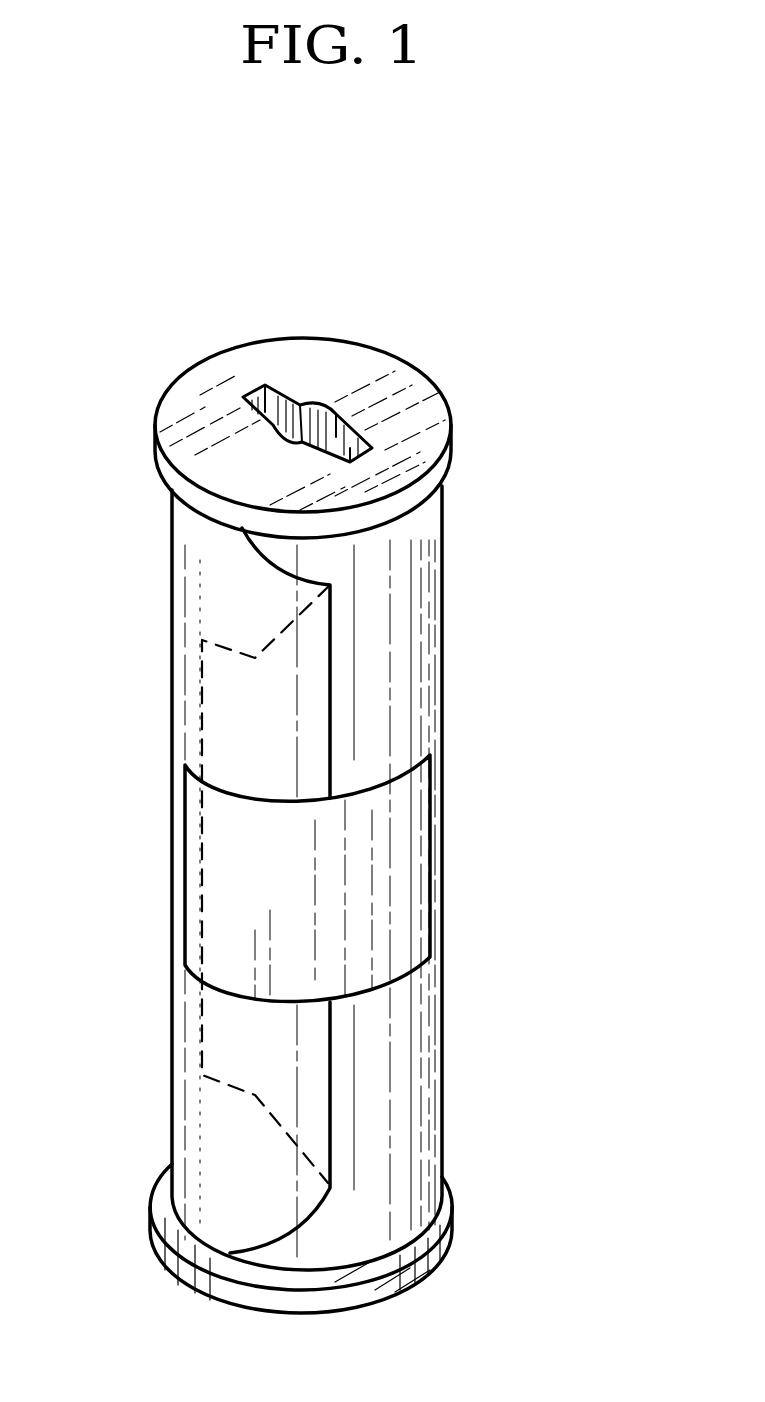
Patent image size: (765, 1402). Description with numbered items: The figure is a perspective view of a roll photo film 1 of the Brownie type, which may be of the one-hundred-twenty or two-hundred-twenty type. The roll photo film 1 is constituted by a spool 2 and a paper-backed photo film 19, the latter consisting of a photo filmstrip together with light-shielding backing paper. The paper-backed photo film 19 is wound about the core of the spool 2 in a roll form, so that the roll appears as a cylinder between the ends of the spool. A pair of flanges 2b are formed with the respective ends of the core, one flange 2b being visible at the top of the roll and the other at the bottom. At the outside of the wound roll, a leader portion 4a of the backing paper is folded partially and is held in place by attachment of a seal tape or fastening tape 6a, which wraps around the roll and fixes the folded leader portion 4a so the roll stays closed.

The roll photo film 1 is at (350, 293).
The spool 2 is at (455, 428).
The flanges 2b is at (245, 372).
The paper-backed photo film 19 is at (440, 630).
The leader portion 4a is at (218, 717).
The fastening tape 6a is at (420, 843).